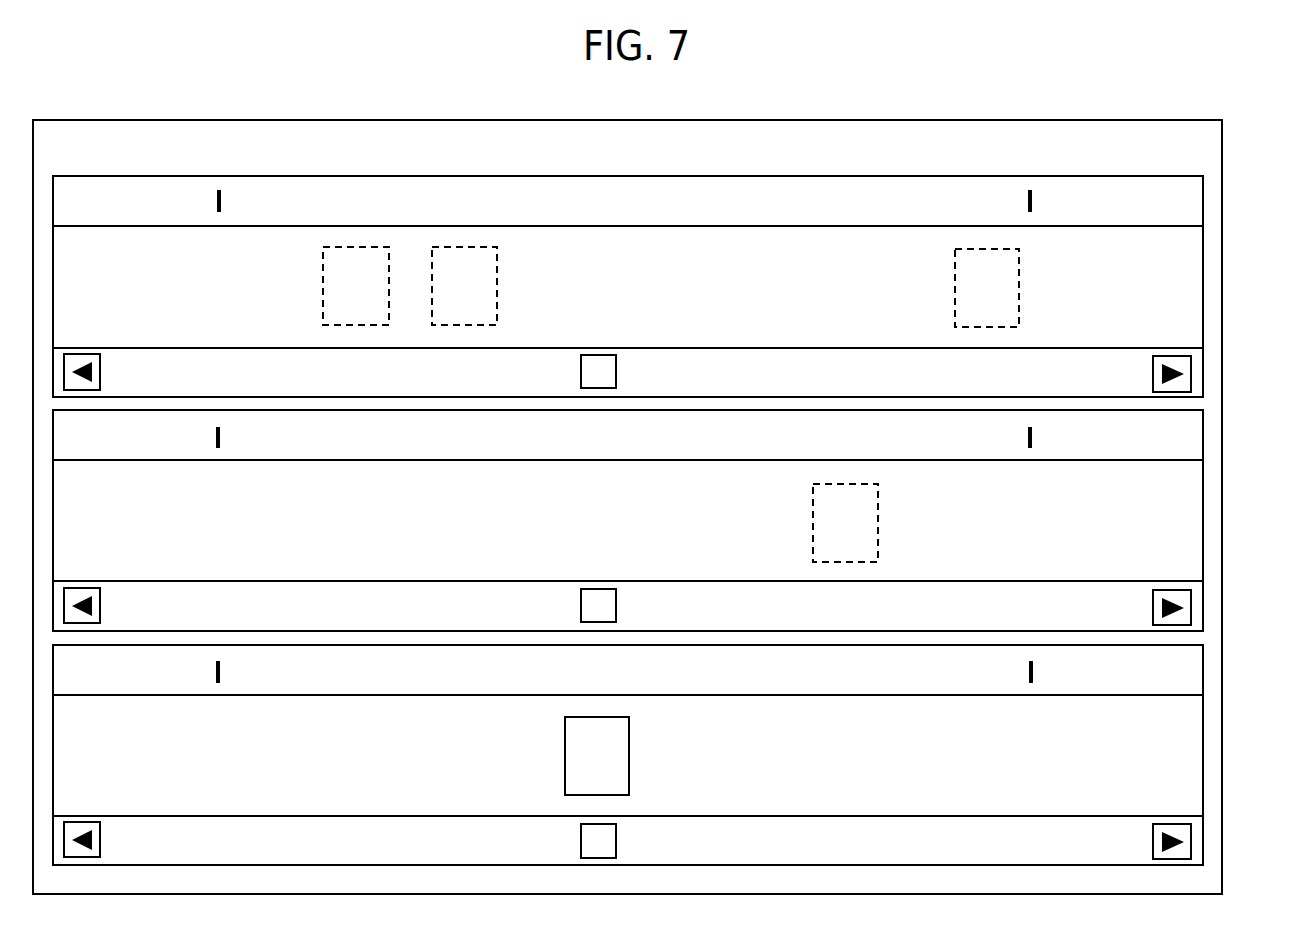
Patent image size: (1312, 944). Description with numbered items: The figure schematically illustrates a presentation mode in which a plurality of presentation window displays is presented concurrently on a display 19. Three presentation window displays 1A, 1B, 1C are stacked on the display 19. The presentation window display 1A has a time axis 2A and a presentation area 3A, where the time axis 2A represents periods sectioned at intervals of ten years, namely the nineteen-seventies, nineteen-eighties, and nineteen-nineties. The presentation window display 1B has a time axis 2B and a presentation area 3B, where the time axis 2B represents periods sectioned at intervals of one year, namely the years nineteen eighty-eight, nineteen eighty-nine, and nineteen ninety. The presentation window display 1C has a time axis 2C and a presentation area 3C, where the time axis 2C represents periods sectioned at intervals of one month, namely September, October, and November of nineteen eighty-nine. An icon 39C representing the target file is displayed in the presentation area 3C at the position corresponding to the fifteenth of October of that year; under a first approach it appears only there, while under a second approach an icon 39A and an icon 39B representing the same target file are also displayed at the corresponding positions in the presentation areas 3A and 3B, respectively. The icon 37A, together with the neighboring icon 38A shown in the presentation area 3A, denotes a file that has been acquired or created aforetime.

The display 19 is at (89, 120).
The presentation window display 1A is at (1203, 181).
The time axis 2A is at (1190, 213).
The presentation area 3A is at (664, 287).
The icon 37A is at (323, 285).
The content item icon (1980s) 38A is at (497, 287).
The icon 39A is at (1019, 289).
The presentation window display 1B is at (1203, 415).
The time axis 2B is at (1190, 450).
The presentation area 3B is at (664, 520).
The icon 39B is at (878, 526).
The presentation window display 1C is at (1203, 650).
The time axis 2C is at (1190, 684).
The presentation area 3C is at (664, 755).
The icon 39C is at (629, 758).